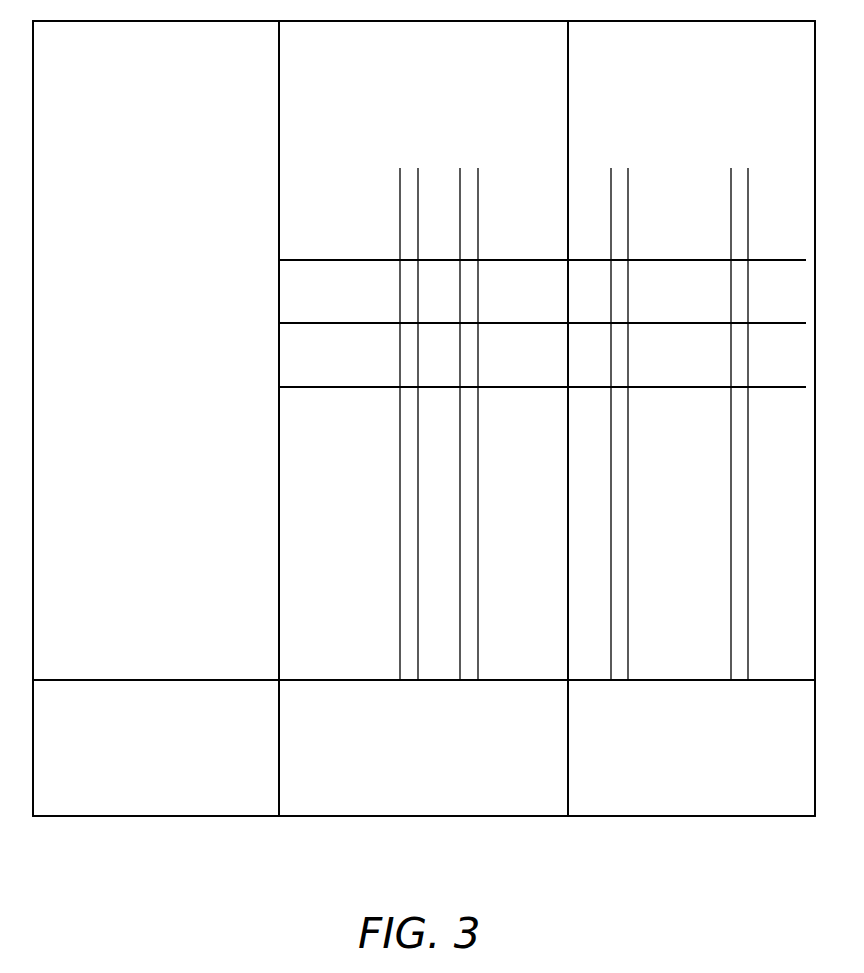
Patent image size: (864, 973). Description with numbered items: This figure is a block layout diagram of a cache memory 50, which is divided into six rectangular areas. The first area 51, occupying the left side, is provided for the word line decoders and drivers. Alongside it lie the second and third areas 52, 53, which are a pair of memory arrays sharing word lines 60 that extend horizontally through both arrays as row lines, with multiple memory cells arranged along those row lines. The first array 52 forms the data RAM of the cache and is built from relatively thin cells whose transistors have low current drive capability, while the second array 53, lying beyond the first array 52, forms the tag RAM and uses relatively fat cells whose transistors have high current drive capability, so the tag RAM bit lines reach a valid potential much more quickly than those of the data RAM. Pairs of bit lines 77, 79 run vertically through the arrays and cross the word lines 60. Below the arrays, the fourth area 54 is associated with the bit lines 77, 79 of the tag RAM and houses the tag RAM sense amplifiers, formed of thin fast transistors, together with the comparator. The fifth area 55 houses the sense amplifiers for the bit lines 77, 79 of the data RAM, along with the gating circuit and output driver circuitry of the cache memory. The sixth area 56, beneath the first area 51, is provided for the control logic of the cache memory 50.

The memory 50 is at (316, 817).
The first area 51 is at (236, 121).
The second area 52 is at (524, 121).
The third area 53 is at (778, 121).
The fourth area 54 is at (522, 777).
The fifth area 55 is at (779, 777).
The sixth area 56 is at (236, 777).
The word lines 60 is at (771, 259).
The bit line 77 is at (399, 574).
The bit line 79 is at (417, 505).